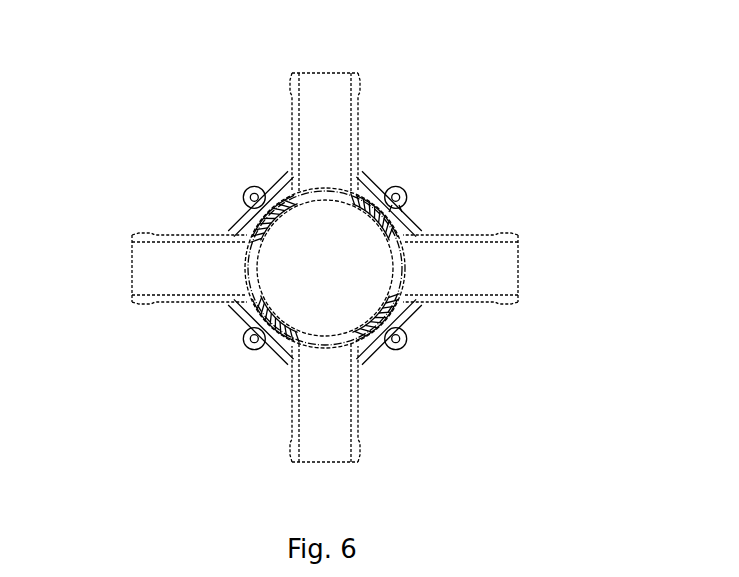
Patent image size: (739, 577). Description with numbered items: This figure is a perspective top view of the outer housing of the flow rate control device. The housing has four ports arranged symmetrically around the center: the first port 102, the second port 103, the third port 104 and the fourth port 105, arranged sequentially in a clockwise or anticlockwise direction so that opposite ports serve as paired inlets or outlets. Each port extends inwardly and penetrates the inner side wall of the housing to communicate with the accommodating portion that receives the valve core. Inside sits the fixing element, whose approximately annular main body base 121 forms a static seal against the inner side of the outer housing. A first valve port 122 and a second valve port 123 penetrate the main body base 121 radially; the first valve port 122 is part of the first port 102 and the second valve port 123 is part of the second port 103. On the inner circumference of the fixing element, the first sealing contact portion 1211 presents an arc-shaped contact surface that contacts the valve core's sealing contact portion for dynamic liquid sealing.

The first port 102 is at (518, 277).
The second port 103 is at (325, 462).
The third port 104 is at (131, 269).
The fourth port 105 is at (325, 73).
The main body base 121 is at (247, 317).
The first sealing contact portion 1211 is at (398, 213).
The first valve port 122 is at (402, 270).
The second valve port 123 is at (323, 344).